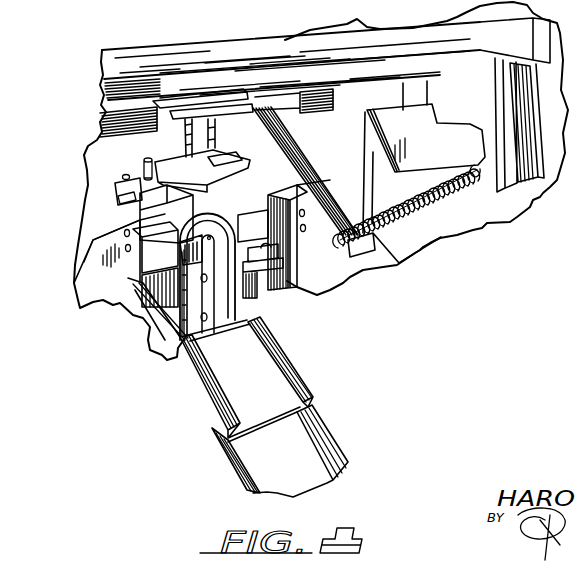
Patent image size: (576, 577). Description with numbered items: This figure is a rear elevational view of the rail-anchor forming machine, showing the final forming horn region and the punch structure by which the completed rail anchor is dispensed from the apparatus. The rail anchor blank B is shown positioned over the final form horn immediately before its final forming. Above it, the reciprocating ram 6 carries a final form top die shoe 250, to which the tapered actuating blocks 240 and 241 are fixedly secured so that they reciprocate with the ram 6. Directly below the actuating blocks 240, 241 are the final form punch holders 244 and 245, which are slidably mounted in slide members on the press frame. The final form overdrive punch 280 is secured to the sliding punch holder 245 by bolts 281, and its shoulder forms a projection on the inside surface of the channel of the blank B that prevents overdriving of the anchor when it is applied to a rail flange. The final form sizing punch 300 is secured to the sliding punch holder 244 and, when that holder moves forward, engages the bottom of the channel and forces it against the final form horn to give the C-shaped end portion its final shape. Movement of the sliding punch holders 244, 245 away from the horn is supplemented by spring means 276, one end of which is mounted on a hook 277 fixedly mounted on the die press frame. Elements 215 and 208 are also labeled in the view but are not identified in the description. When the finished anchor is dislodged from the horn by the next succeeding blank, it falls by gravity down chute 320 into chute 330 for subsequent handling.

The reciprocating ram 6 is at (140, 68).
The tapered actuating block 240 is at (85, 147).
The final form top die shoe 250 is at (323, 98).
The clamp assembly 215 is at (202, 212).
The rail anchor blank B is at (121, 178).
The fastener 208 is at (118, 202).
The final form punch holder 244 is at (88, 258).
The final form sizing punch 300 is at (150, 257).
The bolts 281 is at (306, 211).
The final form overdrive punch 280 is at (277, 230).
The final form punch holder 245 is at (367, 231).
The tapered actuating block 241 is at (313, 171).
The spring means 276 is at (438, 174).
The hook 277 is at (478, 195).
The chute 320 is at (220, 360).
The chute 330 is at (280, 451).